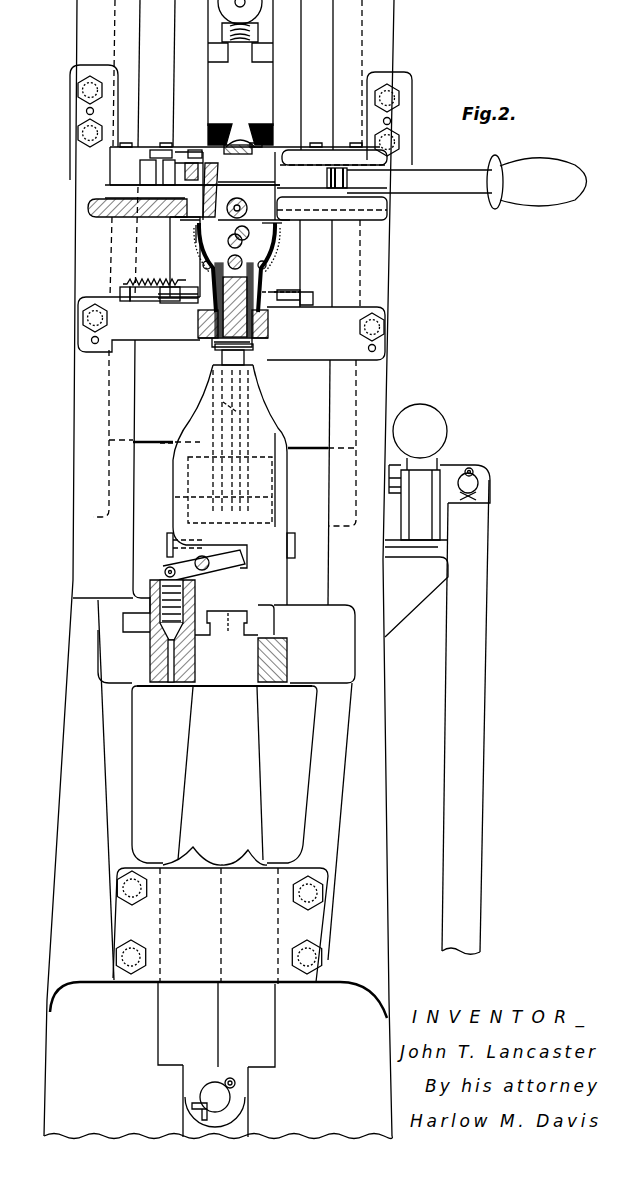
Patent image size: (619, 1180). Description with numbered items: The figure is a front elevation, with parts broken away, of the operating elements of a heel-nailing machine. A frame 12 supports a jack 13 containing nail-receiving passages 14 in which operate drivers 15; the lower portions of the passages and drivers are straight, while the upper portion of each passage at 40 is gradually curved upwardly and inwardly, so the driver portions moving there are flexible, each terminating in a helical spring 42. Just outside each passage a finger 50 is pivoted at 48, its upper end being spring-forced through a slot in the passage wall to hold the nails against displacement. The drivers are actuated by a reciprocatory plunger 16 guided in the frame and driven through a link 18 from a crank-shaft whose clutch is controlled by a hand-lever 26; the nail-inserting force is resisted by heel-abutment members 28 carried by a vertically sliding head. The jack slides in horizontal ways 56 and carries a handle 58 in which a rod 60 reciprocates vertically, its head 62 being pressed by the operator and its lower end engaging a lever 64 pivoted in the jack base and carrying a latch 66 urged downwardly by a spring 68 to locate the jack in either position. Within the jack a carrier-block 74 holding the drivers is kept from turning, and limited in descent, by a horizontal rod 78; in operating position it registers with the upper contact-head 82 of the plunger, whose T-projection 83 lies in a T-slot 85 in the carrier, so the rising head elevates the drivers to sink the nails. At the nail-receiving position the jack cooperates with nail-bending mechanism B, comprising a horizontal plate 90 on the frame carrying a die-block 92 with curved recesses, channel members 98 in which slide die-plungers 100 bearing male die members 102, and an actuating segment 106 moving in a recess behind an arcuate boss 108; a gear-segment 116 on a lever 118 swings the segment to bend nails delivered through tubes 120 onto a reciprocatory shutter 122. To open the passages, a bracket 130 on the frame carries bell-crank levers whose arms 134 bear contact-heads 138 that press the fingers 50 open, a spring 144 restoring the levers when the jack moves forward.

The frame 12 is at (386, 837).
The jack 13 is at (273, 391).
The nail-receiving passages 14 is at (237, 412).
The drivers 15 is at (208, 340).
The reciprocatory plunger 16 is at (276, 1022).
The link 18 is at (248, 1125).
The hand-lever 26 is at (443, 422).
The heel-abutment members 28 is at (264, 128).
The curved upper portion of jack-passage 40 is at (235, 233).
The helical spring 42 is at (210, 313).
The finger pivot 48 is at (203, 265).
The finger 50 is at (196, 247).
The horizontal ways 56 is at (328, 628).
The handle 58 is at (287, 440).
The rod 60 is at (232, 362).
The head 62 is at (225, 348).
The lever 64 is at (229, 563).
The latch 66 is at (152, 640).
The spring 68 is at (164, 584).
The carrier-block 74 is at (243, 627).
The horizontal rod 78 is at (296, 547).
The upper contact-head 82 is at (197, 701).
The T-projection 83 is at (248, 623).
The T-slot 85 is at (227, 612).
The horizontal plate 90 is at (140, 162).
The die-block 92 is at (243, 192).
The channel members 98 is at (88, 211).
The die-plunger 100 is at (92, 192).
The male die members 102 is at (175, 220).
The actuating segment 106 is at (143, 167).
The arcuate boss 108 is at (153, 148).
The gear-segment 116 is at (333, 167).
The lever 118 is at (533, 195).
The tubes 120 is at (203, 147).
The reciprocatory shutter 122 is at (270, 226).
The bracket 130 is at (155, 337).
The lever arm 134 is at (297, 294).
The contact-head 138 is at (326, 333).
The spring 144 is at (159, 277).
The nail-bending mechanism B is at (333, 144).
The nozzle N is at (280, 250).